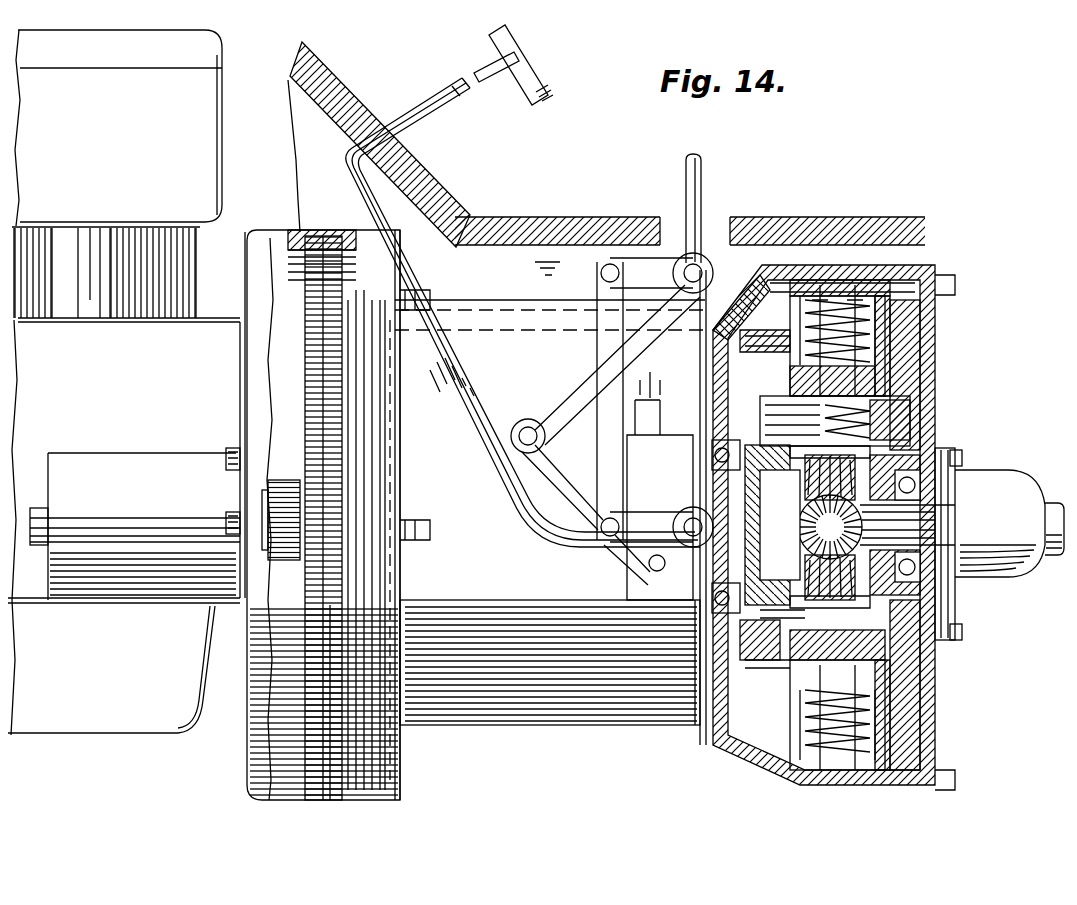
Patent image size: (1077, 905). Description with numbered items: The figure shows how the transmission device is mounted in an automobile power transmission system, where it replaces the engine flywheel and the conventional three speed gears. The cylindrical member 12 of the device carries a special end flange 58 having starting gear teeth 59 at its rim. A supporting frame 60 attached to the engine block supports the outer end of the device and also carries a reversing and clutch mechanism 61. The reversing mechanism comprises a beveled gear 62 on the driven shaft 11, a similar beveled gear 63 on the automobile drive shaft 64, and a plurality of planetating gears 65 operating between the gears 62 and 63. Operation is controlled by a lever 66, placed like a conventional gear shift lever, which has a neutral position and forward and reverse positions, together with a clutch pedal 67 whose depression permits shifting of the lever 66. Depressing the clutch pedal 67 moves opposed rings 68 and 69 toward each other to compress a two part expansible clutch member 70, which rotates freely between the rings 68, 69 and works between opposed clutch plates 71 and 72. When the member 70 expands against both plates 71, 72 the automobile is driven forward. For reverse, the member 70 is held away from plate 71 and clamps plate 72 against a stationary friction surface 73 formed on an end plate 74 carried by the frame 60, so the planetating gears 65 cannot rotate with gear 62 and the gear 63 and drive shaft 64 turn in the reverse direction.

The driven shaft 11 is at (625, 426).
The cylindrical member 12 is at (592, 718).
The end flange 58 is at (370, 457).
The starting gear teeth 59 is at (320, 402).
The supporting frame 60 is at (510, 302).
The reversing and clutch mechanism 61 is at (946, 340).
The beveled gear 62 is at (775, 598).
The beveled gear 63 is at (882, 532).
The drive shaft 64 is at (1050, 513).
The planetating gears 65 is at (803, 630).
The lever 66 is at (697, 178).
The clutch pedal 67 is at (522, 60).
The ring 68 is at (762, 292).
The ring 69 is at (903, 268).
The expansible clutch member 70 is at (850, 280).
The clutch plate 71 is at (793, 277).
The clutch plate 72 is at (887, 348).
The stationary friction surface 73 is at (897, 372).
The end plate 74 is at (927, 407).